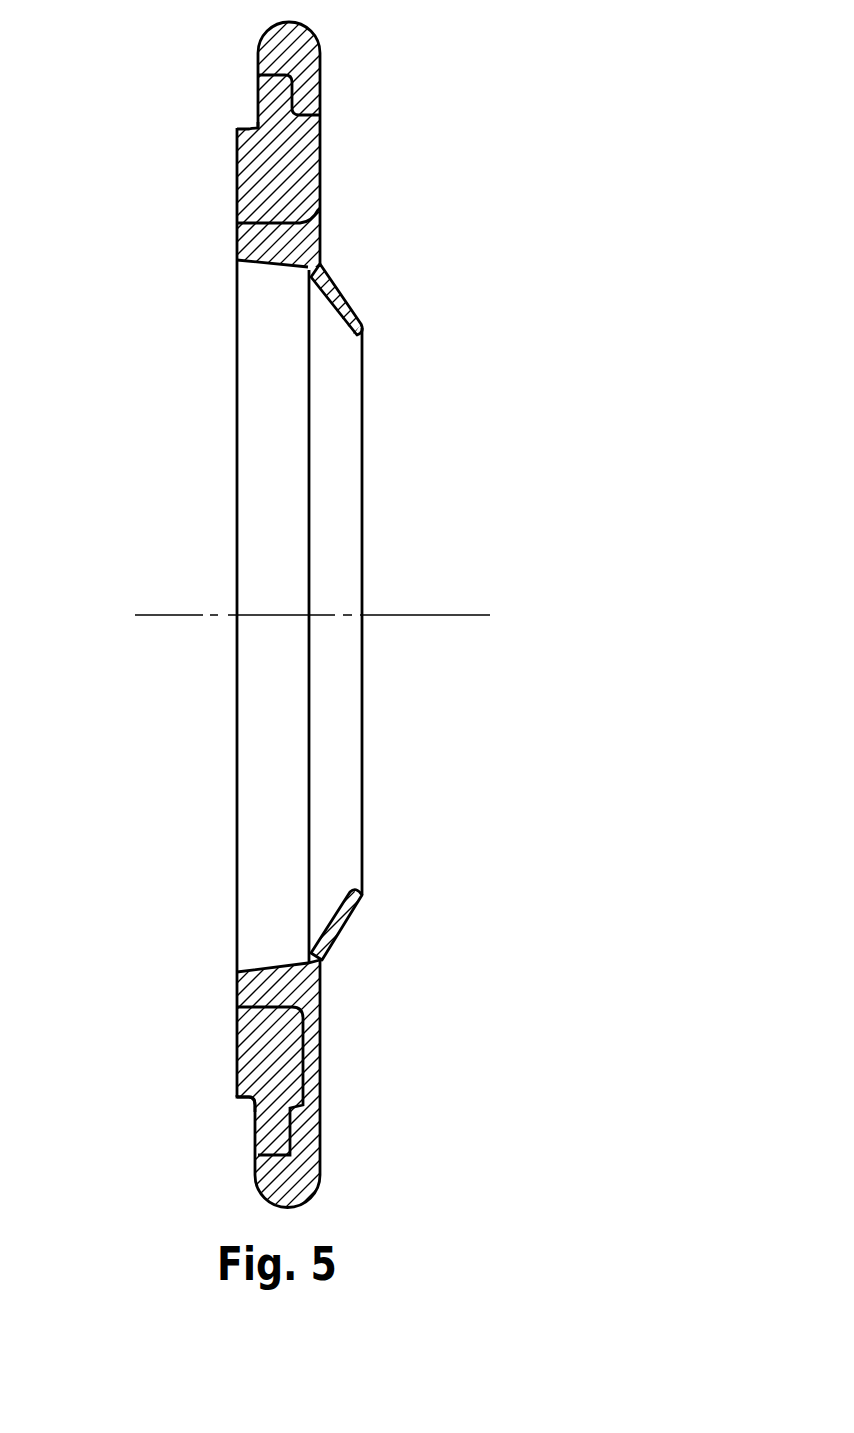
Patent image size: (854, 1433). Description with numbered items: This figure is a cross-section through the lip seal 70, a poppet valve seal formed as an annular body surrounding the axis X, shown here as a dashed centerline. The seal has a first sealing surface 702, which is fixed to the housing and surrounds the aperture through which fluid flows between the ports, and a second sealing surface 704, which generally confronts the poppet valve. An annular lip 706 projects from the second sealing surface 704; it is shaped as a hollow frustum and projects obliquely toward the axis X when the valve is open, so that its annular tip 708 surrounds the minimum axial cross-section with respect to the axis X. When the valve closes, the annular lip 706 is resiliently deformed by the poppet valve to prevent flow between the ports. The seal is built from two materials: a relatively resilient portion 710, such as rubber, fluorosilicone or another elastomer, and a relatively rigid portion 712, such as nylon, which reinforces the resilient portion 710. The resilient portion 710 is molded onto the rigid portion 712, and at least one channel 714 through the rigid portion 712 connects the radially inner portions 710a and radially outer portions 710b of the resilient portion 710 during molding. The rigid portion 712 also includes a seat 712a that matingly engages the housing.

The lip seal 70 is at (219, 560).
The first sealing surface 702 is at (237, 197).
The second sealing surface 704 is at (322, 1028).
The annular lip 706 is at (345, 303).
The annular tip 708 is at (363, 897).
The relatively resilient portion 710 is at (320, 38).
The radially inner portions 710a is at (273, 967).
The radially outer portions 710b is at (320, 1182).
The relatively rigid portion 712 is at (302, 158).
The seat 712a is at (250, 1107).
The channel 714 is at (312, 1073).
The axis X is at (423, 617).